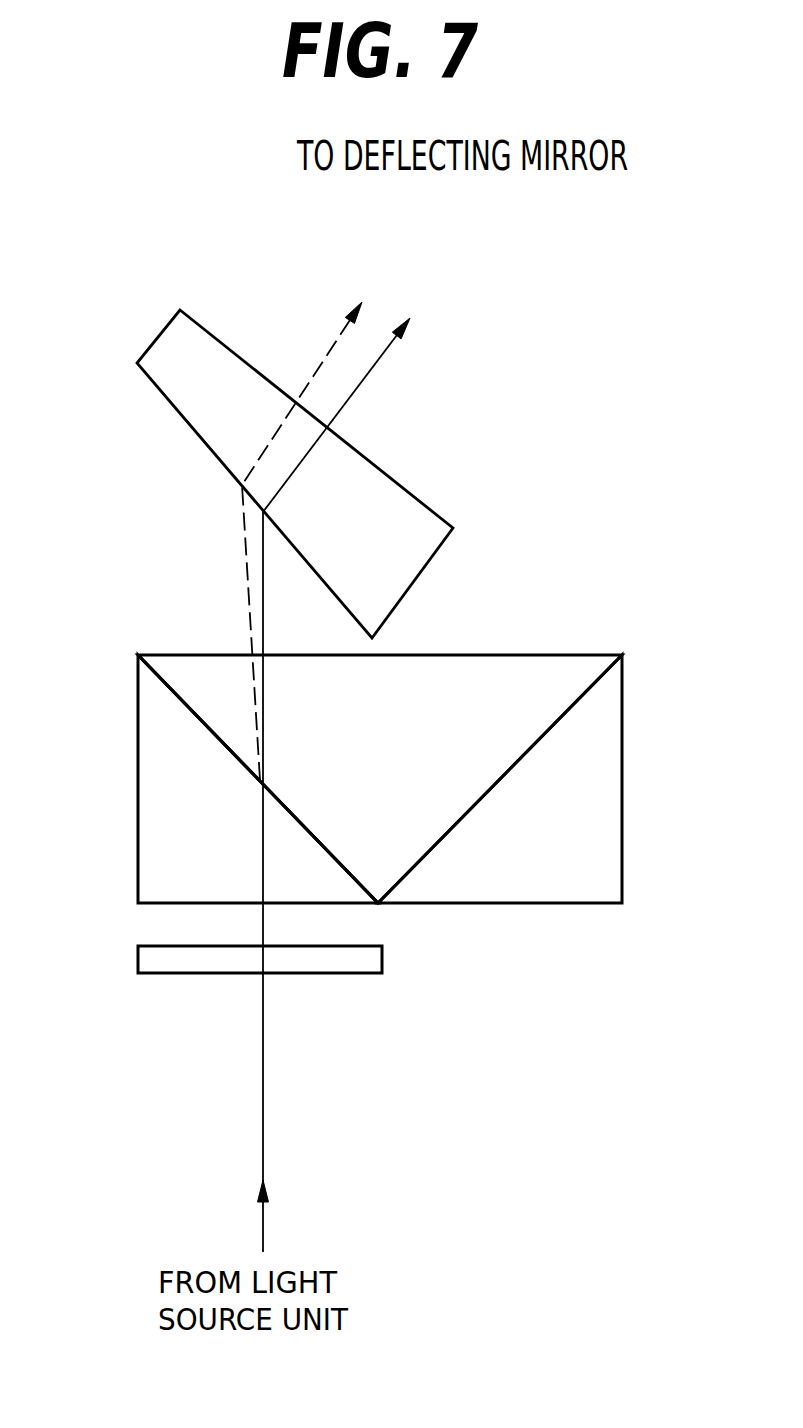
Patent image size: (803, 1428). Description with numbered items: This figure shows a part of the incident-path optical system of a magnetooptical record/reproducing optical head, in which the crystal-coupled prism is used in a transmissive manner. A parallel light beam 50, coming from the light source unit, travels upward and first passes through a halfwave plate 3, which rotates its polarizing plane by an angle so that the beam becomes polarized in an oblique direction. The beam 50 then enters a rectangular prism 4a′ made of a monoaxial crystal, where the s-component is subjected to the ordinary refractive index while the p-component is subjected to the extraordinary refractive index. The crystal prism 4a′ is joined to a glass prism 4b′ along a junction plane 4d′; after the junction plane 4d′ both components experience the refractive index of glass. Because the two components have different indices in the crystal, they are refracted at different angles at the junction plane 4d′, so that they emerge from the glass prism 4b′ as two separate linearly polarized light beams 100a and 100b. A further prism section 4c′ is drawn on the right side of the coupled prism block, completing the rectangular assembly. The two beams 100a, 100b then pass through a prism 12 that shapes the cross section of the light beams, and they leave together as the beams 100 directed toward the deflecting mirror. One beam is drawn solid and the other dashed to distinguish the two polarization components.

The prism 12 is at (150, 343).
The parallel beam 50 is at (263, 1104).
The light beams 100 is at (462, 302).
The linearly polarized light beam 100a is at (354, 399).
The linearly polarized light beam 100b is at (312, 518).
The rectangular prism 4a′ is at (155, 865).
The glass prism 4b′ is at (522, 655).
The third prism section 4c′ is at (557, 888).
The junction plane 4d′ is at (307, 827).
The halfwave plate 3 is at (383, 963).